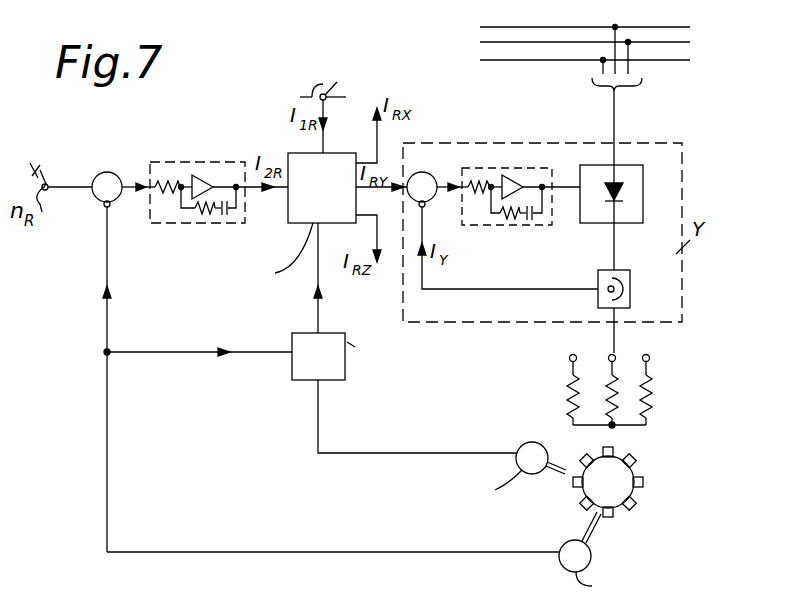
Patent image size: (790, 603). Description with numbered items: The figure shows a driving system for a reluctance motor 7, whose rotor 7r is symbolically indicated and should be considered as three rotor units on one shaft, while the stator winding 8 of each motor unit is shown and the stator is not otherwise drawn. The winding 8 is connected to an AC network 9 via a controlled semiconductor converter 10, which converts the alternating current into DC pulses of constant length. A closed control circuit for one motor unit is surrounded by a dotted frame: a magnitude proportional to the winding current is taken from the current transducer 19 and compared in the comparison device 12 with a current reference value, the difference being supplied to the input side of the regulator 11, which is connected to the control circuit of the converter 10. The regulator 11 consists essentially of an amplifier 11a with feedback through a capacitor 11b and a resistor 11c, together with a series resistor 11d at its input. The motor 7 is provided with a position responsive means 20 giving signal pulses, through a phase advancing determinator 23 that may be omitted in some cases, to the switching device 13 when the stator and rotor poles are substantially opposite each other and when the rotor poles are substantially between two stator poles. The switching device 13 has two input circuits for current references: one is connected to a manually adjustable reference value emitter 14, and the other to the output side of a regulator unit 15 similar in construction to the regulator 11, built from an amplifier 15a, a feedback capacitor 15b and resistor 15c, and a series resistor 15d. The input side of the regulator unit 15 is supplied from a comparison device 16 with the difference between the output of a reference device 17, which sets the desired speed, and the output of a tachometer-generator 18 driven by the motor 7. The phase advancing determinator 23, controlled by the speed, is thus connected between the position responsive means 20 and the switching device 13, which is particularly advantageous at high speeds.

The reluctance motor 7 is at (626, 481).
The rotor 7r is at (627, 493).
The stator winding 8 is at (606, 393).
The AC network 9 is at (568, 54).
The controlled semiconductor converter 10 is at (640, 188).
The regulator 11 is at (513, 188).
The amplifier 11a is at (510, 182).
The capacitor 11b is at (533, 222).
The resistor 11c is at (505, 218).
The series resistor 11d is at (470, 182).
The comparison device 12 is at (414, 174).
The switching device 13 is at (320, 160).
The manually adjustable reference value emitter 14 is at (314, 90).
The regulator unit 15 is at (203, 195).
The amplifier 15a is at (205, 182).
The capacitor 15b is at (228, 216).
The resistor 15c is at (203, 212).
The series resistor 15d is at (164, 180).
The comparison device 16 is at (101, 174).
The reference device 17 is at (46, 176).
The tachometer-generator 18 is at (591, 559).
The current transducer 19 is at (632, 287).
The position responsive means 20 is at (520, 447).
The phase advancing determinator 23 is at (291, 364).